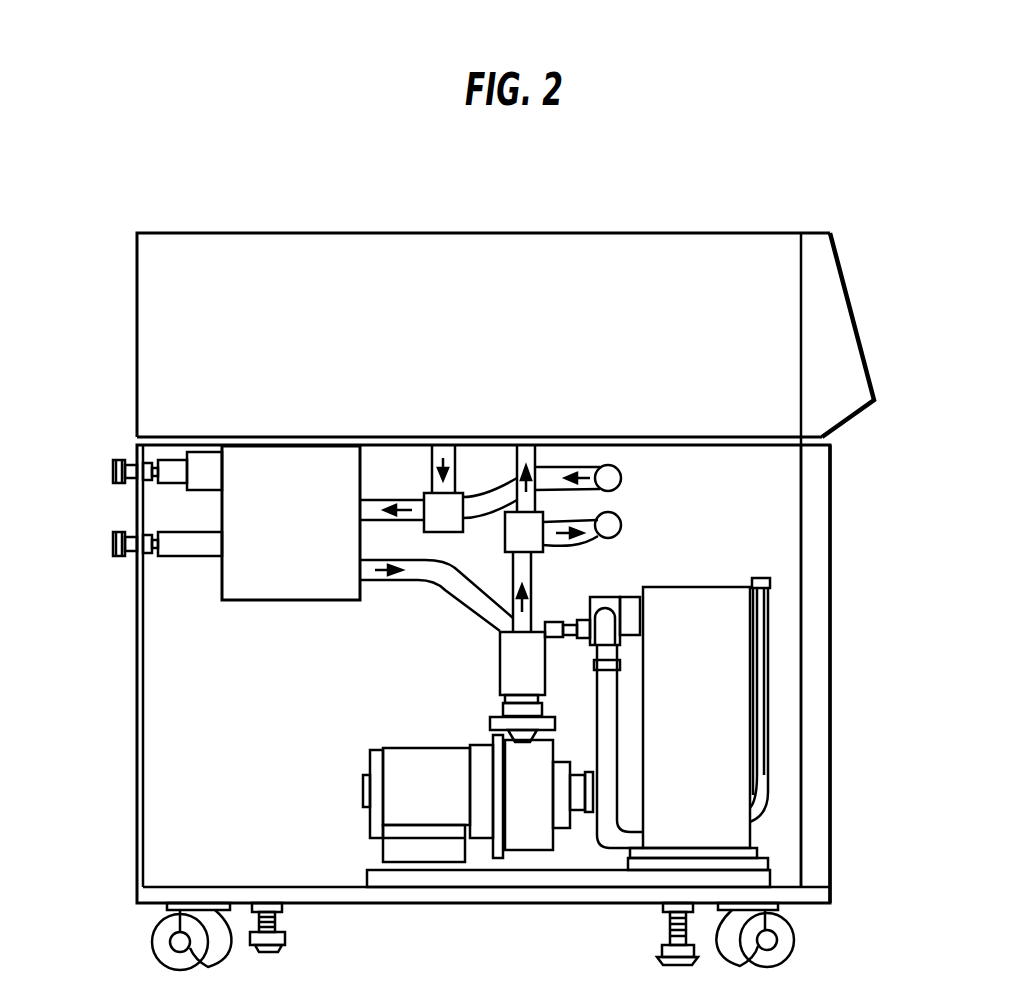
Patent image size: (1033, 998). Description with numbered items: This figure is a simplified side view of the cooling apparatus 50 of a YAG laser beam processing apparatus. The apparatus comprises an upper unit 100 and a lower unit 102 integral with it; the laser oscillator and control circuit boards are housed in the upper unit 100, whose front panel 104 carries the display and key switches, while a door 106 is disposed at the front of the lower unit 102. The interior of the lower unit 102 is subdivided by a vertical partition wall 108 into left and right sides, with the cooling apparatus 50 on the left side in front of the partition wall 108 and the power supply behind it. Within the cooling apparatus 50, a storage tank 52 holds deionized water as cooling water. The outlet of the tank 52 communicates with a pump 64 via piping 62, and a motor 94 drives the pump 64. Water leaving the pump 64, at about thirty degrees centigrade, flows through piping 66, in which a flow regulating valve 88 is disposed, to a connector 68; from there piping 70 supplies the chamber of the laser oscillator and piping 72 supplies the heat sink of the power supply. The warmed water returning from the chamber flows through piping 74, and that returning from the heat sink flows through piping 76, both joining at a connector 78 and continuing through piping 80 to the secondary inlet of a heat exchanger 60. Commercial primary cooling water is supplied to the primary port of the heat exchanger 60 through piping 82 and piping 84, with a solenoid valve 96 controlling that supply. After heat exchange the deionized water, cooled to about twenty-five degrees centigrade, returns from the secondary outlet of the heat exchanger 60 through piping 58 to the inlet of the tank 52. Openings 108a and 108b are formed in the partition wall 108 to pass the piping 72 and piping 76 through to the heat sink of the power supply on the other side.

The cooling apparatus 50 is at (365, 729).
The storage tank 52 is at (722, 700).
The piping 58 is at (412, 585).
The heat exchanger 60 is at (282, 572).
The piping 62 is at (633, 798).
The pump 64 is at (528, 832).
The piping 66 is at (512, 575).
The connector 68 is at (545, 555).
The piping 70 is at (521, 460).
The piping 72 is at (615, 546).
The piping 74 is at (430, 460).
The piping 76 is at (572, 468).
The connector 78 is at (418, 493).
The piping 80 is at (378, 500).
The piping 82 is at (172, 460).
The piping 84 is at (190, 548).
The flow regulating valve 88 is at (502, 665).
The motor 94 is at (393, 808).
The solenoid valve 96 is at (206, 456).
The upper unit 100 is at (568, 226).
The lower unit 102 is at (160, 666).
The front panel 104 is at (853, 297).
The door 106 is at (835, 622).
The vertical partition wall 108 is at (775, 508).
The opening 108a is at (620, 510).
The opening 108b is at (598, 462).